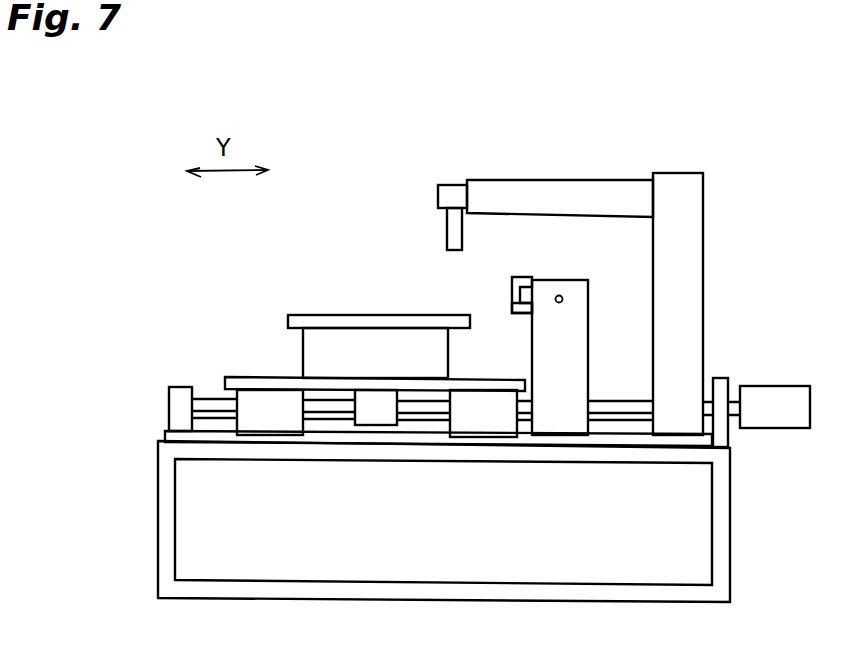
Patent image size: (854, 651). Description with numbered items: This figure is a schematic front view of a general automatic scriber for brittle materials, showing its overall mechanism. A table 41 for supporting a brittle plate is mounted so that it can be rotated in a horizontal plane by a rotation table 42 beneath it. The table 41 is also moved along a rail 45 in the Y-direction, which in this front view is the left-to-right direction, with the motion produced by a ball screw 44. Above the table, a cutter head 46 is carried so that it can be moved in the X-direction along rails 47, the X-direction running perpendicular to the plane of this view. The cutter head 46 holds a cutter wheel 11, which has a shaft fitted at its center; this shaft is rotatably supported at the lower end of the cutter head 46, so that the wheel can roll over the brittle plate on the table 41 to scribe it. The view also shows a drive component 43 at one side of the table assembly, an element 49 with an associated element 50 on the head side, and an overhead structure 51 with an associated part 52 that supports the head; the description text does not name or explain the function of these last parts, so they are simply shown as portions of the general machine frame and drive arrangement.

The cutter wheel 11 is at (508, 316).
The table 41 is at (306, 315).
The rotation table 42 is at (302, 356).
The motor 43 is at (776, 386).
The ball screw 44 is at (213, 399).
The rail 45 is at (210, 437).
The cutter head 46 is at (512, 296).
The rails 47 is at (527, 279).
The head 49 is at (387, 217).
The head 50 is at (443, 226).
The arm 51 is at (585, 269).
The arm 52 is at (515, 180).